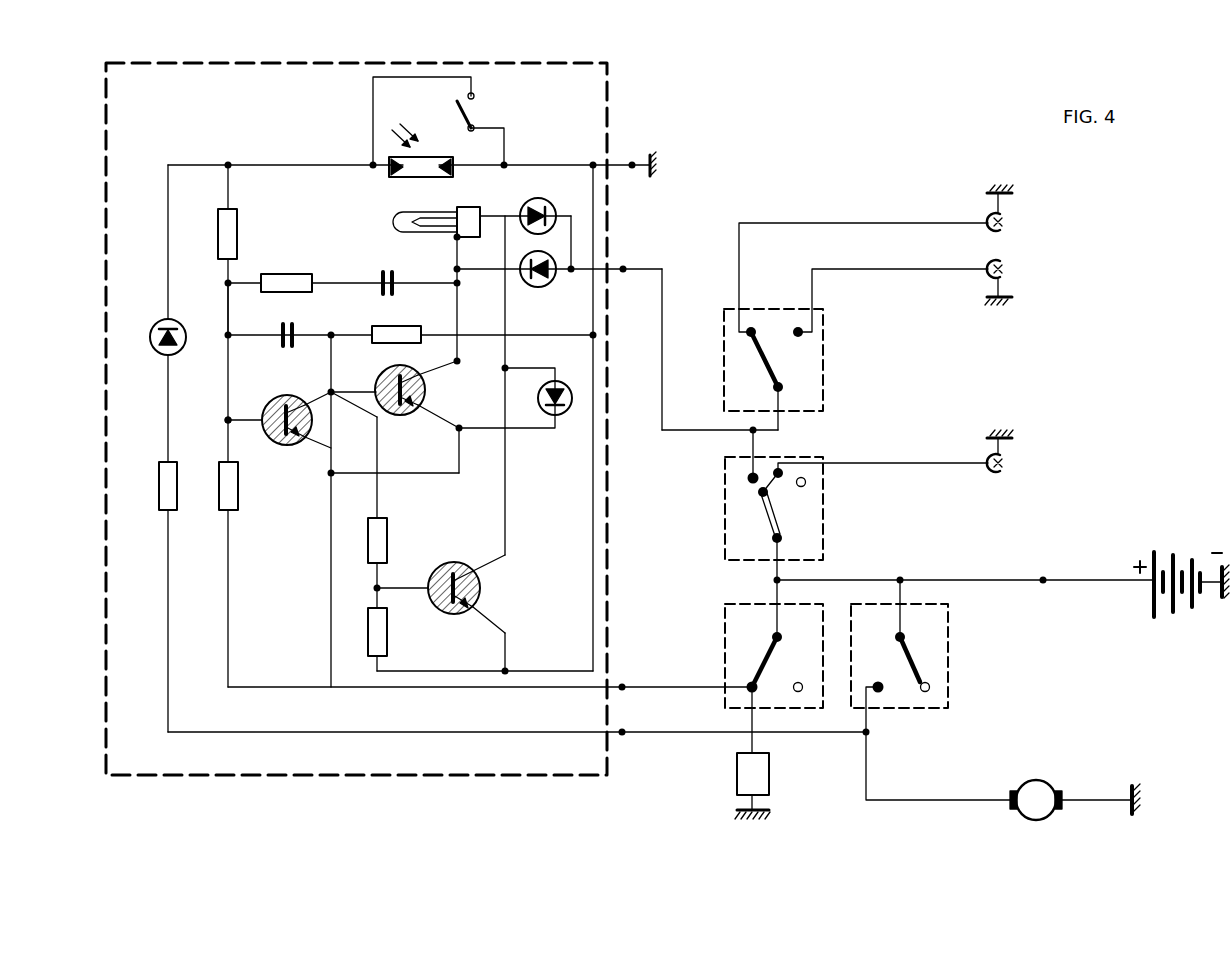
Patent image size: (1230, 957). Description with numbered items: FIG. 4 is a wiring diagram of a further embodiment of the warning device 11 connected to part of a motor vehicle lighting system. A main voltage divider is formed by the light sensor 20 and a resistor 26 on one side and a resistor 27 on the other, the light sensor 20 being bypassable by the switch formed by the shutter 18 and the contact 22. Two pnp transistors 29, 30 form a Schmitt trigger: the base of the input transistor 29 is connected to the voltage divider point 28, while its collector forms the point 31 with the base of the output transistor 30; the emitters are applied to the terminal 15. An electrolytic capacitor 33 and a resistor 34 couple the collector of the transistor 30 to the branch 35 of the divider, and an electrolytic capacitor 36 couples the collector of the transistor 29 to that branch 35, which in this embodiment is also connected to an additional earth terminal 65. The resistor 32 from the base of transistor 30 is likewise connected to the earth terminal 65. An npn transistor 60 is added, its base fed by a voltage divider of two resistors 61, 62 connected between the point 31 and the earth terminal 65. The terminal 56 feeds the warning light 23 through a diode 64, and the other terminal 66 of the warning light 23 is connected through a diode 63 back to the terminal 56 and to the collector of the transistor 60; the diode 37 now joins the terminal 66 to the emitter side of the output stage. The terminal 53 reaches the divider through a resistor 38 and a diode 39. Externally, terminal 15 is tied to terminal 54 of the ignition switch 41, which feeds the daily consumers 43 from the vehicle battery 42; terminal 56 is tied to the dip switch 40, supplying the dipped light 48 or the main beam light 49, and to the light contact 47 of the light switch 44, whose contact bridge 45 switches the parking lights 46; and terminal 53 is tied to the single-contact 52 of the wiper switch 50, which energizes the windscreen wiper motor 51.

The device 11 is at (636, 111).
The terminal 15 is at (622, 684).
The shutter 18 is at (455, 110).
The light sensor 20 is at (402, 176).
The contact 22 is at (474, 97).
The warning light 23 is at (422, 232).
The resistor 26 is at (237, 229).
The resistor 27 is at (238, 489).
The voltage divider point 28 is at (225, 419).
The transistor 29 is at (270, 404).
The transistor 30 is at (403, 415).
The point 31 is at (338, 398).
The resistor 32 is at (398, 328).
The electrolytic capacitor 33 is at (382, 274).
The resistor 34 is at (280, 274).
The branch 35 is at (226, 312).
The electrolytic capacitor 36 is at (295, 331).
The diode 37 is at (575, 387).
The resistor 38 is at (165, 487).
The diode 39 is at (150, 331).
The dip switch 40 is at (823, 359).
The ignition switch 41 is at (724, 613).
The vehicle battery 42 is at (1163, 552).
The daily consumers 43 is at (769, 776).
The light switch 44 is at (823, 517).
The contact bridge 45 is at (781, 468).
The parking lights 46 is at (1006, 464).
The light contact 47 is at (748, 478).
The dipped light 48 is at (1006, 223).
The main beam light 49 is at (1006, 270).
The wiper switch 50 is at (948, 649).
The windscreen wiper motor 51 is at (1050, 786).
The single-contact 52 is at (880, 692).
The terminal 53 is at (622, 735).
The terminal 54 is at (748, 685).
The terminal 56 is at (623, 272).
The transistor 60 is at (458, 614).
The resistor 61 is at (387, 542).
The resistor 62 is at (387, 635).
The diode 63 is at (549, 201).
The diode 64 is at (537, 284).
The earth terminal 65 is at (632, 168).
The terminal 66 is at (482, 207).